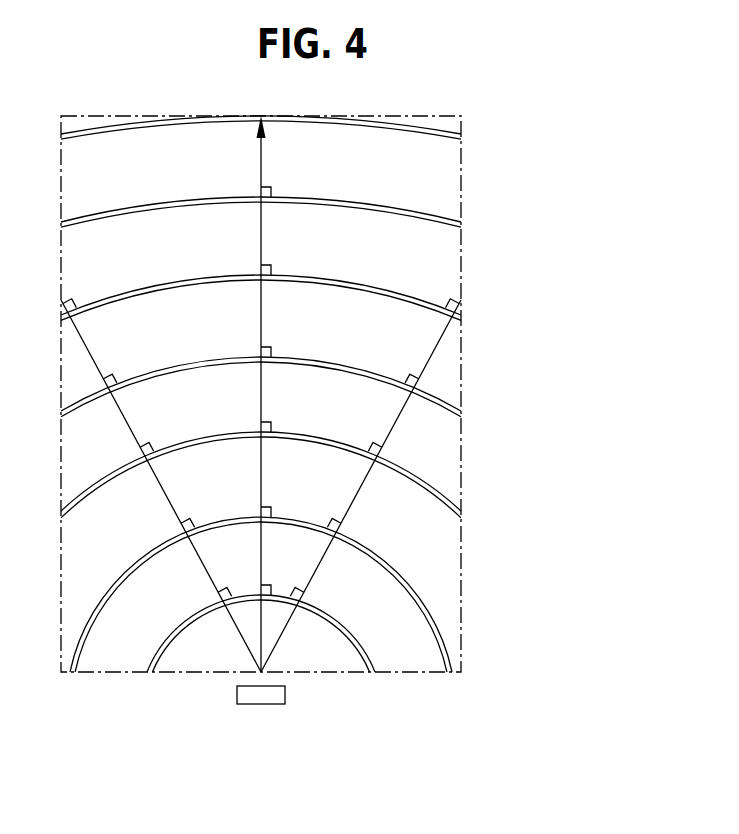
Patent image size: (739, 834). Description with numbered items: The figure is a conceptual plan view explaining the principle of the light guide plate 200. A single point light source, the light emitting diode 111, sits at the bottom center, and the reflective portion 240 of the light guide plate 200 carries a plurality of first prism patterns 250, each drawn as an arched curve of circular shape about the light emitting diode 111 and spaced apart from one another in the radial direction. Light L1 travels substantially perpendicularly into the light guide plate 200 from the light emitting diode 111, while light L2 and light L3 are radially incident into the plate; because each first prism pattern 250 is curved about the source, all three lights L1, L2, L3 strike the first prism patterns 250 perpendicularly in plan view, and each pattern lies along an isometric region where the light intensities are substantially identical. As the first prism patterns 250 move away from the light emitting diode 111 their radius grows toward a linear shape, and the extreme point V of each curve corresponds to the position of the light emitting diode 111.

The light guide plate 200 is at (488, 496).
The first prism patterns 250 is at (461, 223).
The reflective portion 240 is at (453, 373).
The light emitting diode 111 is at (259, 695).
The light L1 is at (258, 315).
The light L2 is at (160, 480).
The light L3 is at (362, 485).
The extreme points V is at (268, 504).